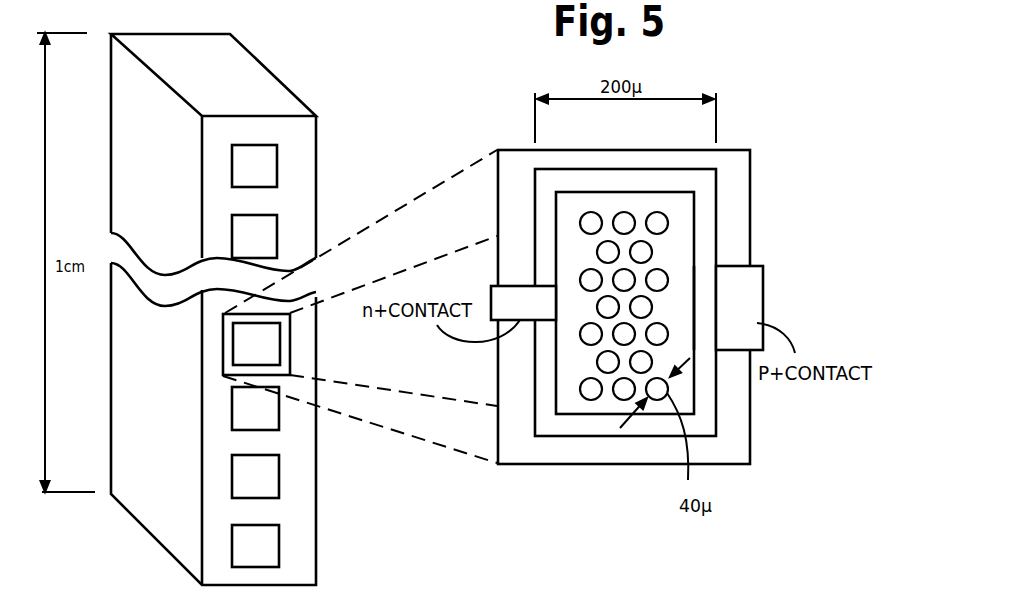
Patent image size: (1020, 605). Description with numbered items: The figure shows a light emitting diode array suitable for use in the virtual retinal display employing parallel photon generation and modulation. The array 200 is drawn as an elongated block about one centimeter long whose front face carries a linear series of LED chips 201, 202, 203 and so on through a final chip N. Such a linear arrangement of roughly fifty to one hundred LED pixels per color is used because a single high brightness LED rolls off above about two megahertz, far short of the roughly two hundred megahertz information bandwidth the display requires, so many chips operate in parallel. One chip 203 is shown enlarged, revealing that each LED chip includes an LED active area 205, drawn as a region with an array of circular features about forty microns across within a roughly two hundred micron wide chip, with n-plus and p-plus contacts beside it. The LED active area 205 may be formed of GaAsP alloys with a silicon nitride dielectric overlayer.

The array 200 is at (266, 68).
The LED chip 201 is at (262, 175).
The LED chip 202 is at (265, 243).
The LED chip 203 is at (288, 334).
The LED active area 205 is at (683, 207).
The LED chip N is at (270, 543).